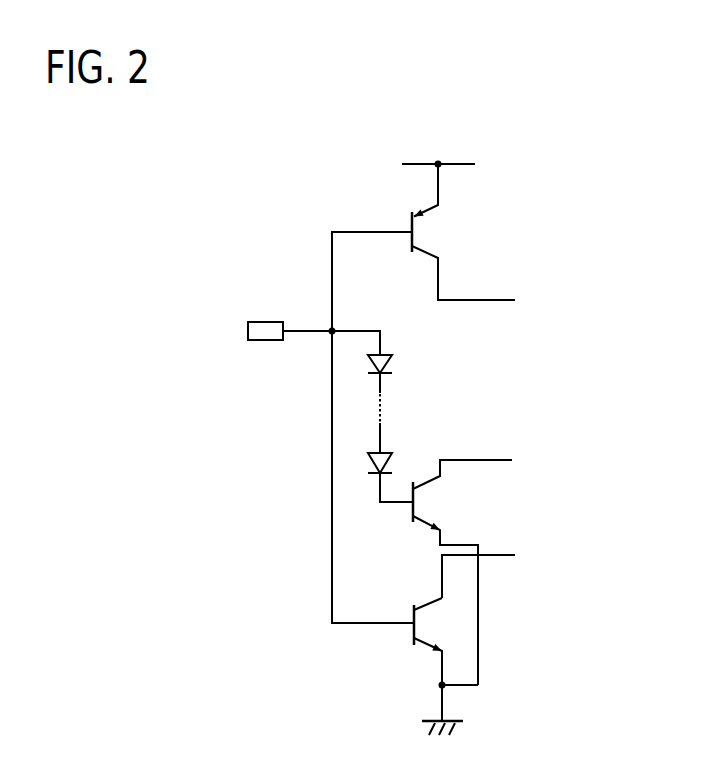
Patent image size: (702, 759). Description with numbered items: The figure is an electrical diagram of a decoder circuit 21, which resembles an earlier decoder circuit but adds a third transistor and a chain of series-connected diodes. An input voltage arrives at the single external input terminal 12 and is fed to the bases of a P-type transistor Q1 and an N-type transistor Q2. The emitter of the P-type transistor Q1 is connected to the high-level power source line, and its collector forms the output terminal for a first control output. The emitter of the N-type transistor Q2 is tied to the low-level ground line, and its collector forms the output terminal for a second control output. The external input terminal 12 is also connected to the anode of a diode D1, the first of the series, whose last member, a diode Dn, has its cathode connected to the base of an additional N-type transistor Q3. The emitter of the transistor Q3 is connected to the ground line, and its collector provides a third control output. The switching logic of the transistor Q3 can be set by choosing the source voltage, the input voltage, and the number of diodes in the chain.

The decoder circuit 21 is at (247, 186).
The external input terminal 12 is at (268, 342).
The P-type transistor Q1 is at (410, 222).
The N-type transistor Q2 is at (410, 632).
The N-type transistor Q3 is at (410, 512).
The diode D1 is at (393, 360).
The diode Dn is at (393, 460).